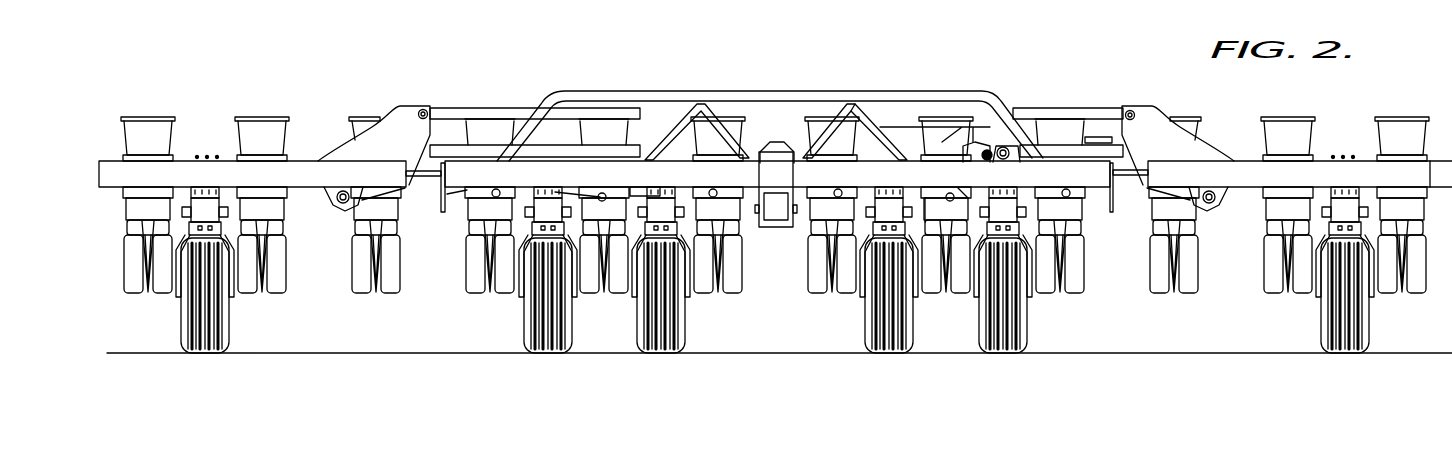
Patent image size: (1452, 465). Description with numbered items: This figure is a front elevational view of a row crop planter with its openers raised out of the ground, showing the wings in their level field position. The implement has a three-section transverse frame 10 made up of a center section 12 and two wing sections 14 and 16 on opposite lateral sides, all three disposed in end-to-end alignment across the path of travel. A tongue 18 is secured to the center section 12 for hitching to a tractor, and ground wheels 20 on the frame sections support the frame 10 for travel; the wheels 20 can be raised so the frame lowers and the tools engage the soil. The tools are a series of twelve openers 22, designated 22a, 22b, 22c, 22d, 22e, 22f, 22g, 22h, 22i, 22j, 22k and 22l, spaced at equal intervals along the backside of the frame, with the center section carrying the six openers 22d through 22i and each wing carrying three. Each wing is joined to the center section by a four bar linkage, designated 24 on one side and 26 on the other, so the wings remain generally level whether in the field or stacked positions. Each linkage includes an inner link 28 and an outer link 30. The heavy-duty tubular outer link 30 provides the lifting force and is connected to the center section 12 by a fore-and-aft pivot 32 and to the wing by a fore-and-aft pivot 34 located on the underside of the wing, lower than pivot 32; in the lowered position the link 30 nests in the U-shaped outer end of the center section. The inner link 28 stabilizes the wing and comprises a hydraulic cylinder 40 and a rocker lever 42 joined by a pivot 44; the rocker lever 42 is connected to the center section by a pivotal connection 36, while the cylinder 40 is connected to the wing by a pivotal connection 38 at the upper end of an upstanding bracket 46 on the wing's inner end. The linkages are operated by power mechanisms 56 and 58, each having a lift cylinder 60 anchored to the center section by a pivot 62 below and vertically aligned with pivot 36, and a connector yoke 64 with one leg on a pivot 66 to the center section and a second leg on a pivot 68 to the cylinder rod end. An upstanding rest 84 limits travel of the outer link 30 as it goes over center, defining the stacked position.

The transverse frame 10 is at (1095, 201).
The center section 12 is at (1068, 170).
The wing section 14 is at (230, 163).
The wing section 16 is at (1325, 166).
The tongue 18 is at (775, 208).
The ground wheels 20 is at (775, 257).
The openers 22 is at (138, 113).
The opener 22a is at (154, 127).
The opener 22b is at (258, 127).
The opener 22c is at (356, 121).
The opener 22d is at (492, 127).
The opener 22e is at (618, 132).
The opener 22f is at (731, 127).
The opener 22g is at (806, 170).
The opener 22h is at (952, 189).
The opener 22i is at (1077, 127).
The opener 22j is at (1190, 126).
The opener 22k is at (1293, 127).
The opener 22l is at (1408, 127).
The four bar linkage 24 is at (427, 179).
The four bar linkage 26 is at (1127, 176).
The inner link 28 is at (779, 88).
The outer link 30 is at (1102, 152).
The fore-and-aft pivot 32 is at (1003, 147).
The fore-and-aft pivot 34 is at (1214, 202).
The pivotal connection 36 is at (806, 150).
The pivotal connection 38 is at (1134, 112).
The hydraulic cylinder 40 is at (886, 98).
The rocker lever 42 is at (832, 137).
The pivot 44 is at (838, 140).
The upstanding bracket 46 is at (1185, 142).
The power mechanism 56 is at (646, 189).
The power mechanism 58 is at (933, 203).
The lift cylinder 60 is at (890, 194).
The pivot 62 is at (836, 197).
The connector yoke 64 is at (963, 194).
The pivot 66 is at (987, 150).
The pivot 68 is at (950, 194).
The upstanding rest 84 is at (965, 152).